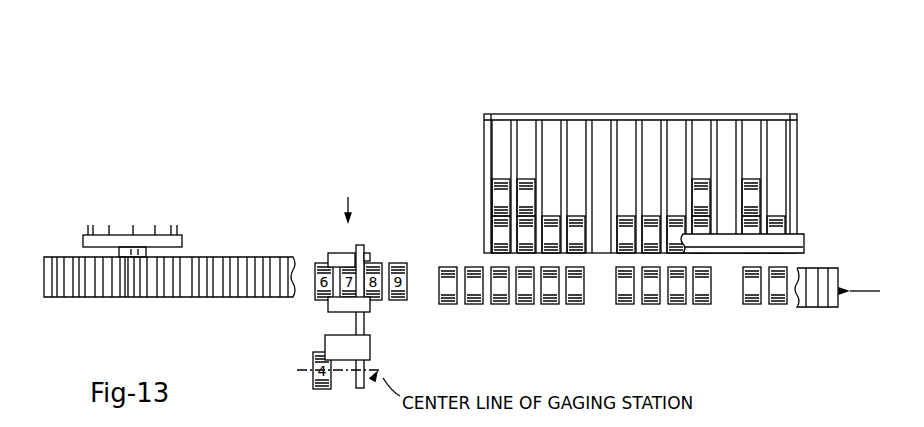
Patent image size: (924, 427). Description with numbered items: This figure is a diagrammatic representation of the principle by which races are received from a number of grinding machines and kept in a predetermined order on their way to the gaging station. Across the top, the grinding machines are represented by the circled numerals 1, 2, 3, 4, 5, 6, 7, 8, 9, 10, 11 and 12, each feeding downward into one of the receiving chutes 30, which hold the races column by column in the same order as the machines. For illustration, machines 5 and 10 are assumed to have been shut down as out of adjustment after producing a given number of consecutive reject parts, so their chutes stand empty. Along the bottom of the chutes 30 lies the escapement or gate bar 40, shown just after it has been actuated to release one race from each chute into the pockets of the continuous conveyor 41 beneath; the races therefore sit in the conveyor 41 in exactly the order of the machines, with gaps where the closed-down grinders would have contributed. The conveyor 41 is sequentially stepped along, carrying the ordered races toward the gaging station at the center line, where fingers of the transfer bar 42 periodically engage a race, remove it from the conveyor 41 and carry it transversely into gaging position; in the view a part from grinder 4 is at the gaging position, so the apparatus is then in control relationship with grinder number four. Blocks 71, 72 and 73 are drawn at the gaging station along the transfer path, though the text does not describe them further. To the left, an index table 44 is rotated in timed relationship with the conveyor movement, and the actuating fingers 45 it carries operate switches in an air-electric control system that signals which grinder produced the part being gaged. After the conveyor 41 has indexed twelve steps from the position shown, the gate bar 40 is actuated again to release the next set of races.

The receiving chutes 30 is at (808, 159).
The escapement or gate bar 40 is at (804, 241).
The continuous conveyor 41 is at (600, 298).
The transfer bar 42 is at (363, 256).
The index table 44 is at (182, 243).
The actuating fingers 45 is at (128, 209).
The upper gage block 71 is at (342, 258).
The middle gage block 72 is at (330, 306).
The lower gage block 73 is at (330, 350).
The grinding machine 1 is at (502, 108).
The grinding machine 2 is at (527, 108).
The grinding machine 3 is at (552, 108).
The grinding machine 4 is at (577, 108).
The grinding machine 5 is at (602, 108).
The grinding machine 6 is at (627, 108).
The grinding machine 7 is at (652, 108).
The grinding machine 8 is at (677, 108).
The grinding machine 9 is at (702, 108).
The grinding machine 10 is at (727, 108).
The grinding machine 11 is at (752, 108).
The grinding machine 12 is at (777, 108).